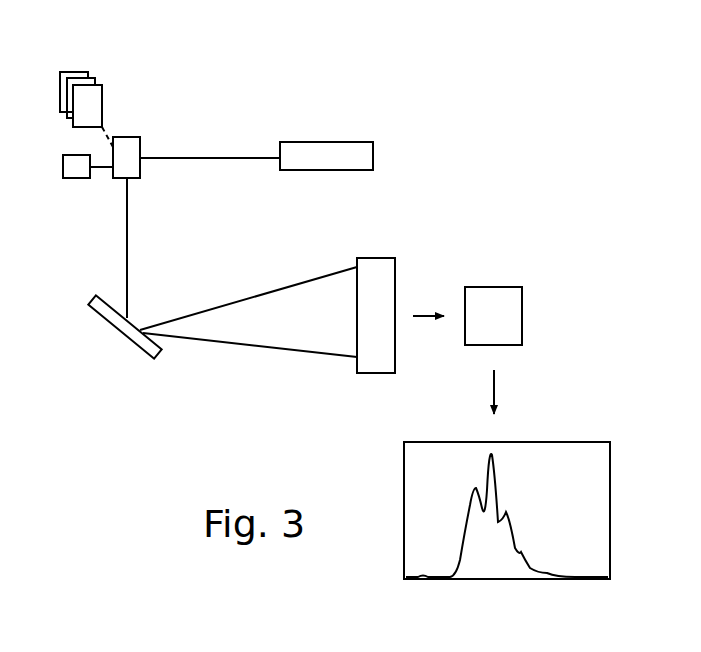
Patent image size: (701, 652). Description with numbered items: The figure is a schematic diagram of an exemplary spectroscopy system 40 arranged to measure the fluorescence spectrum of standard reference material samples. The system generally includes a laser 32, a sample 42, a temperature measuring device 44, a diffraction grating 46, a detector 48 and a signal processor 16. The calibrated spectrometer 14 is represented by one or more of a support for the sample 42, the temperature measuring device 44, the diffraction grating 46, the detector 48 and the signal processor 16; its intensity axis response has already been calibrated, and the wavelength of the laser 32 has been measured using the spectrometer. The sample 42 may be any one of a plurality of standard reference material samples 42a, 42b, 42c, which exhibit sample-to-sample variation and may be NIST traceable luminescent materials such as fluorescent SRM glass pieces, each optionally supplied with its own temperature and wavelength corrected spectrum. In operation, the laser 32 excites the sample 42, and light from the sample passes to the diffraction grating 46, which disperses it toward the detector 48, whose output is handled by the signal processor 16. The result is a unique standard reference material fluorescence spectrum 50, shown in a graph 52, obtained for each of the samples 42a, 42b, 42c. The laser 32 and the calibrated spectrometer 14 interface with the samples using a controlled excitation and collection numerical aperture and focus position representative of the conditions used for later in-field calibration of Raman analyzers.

The calibrated spectrometer 14 is at (155, 388).
The signal processor 16 is at (495, 286).
The laser 32 is at (335, 141).
The spectroscopy system 40 is at (224, 84).
The sample 42 is at (133, 137).
The standard reference material sample 42a is at (98, 95).
The standard reference material sample 42b is at (92, 78).
The standard reference material sample 42c is at (77, 72).
The temperature measuring device 44 is at (75, 180).
The diffraction grating 46 is at (126, 339).
The detector 48 is at (383, 257).
The standard reference material fluorescence spectrum 50 is at (502, 513).
The graph 52 is at (585, 442).